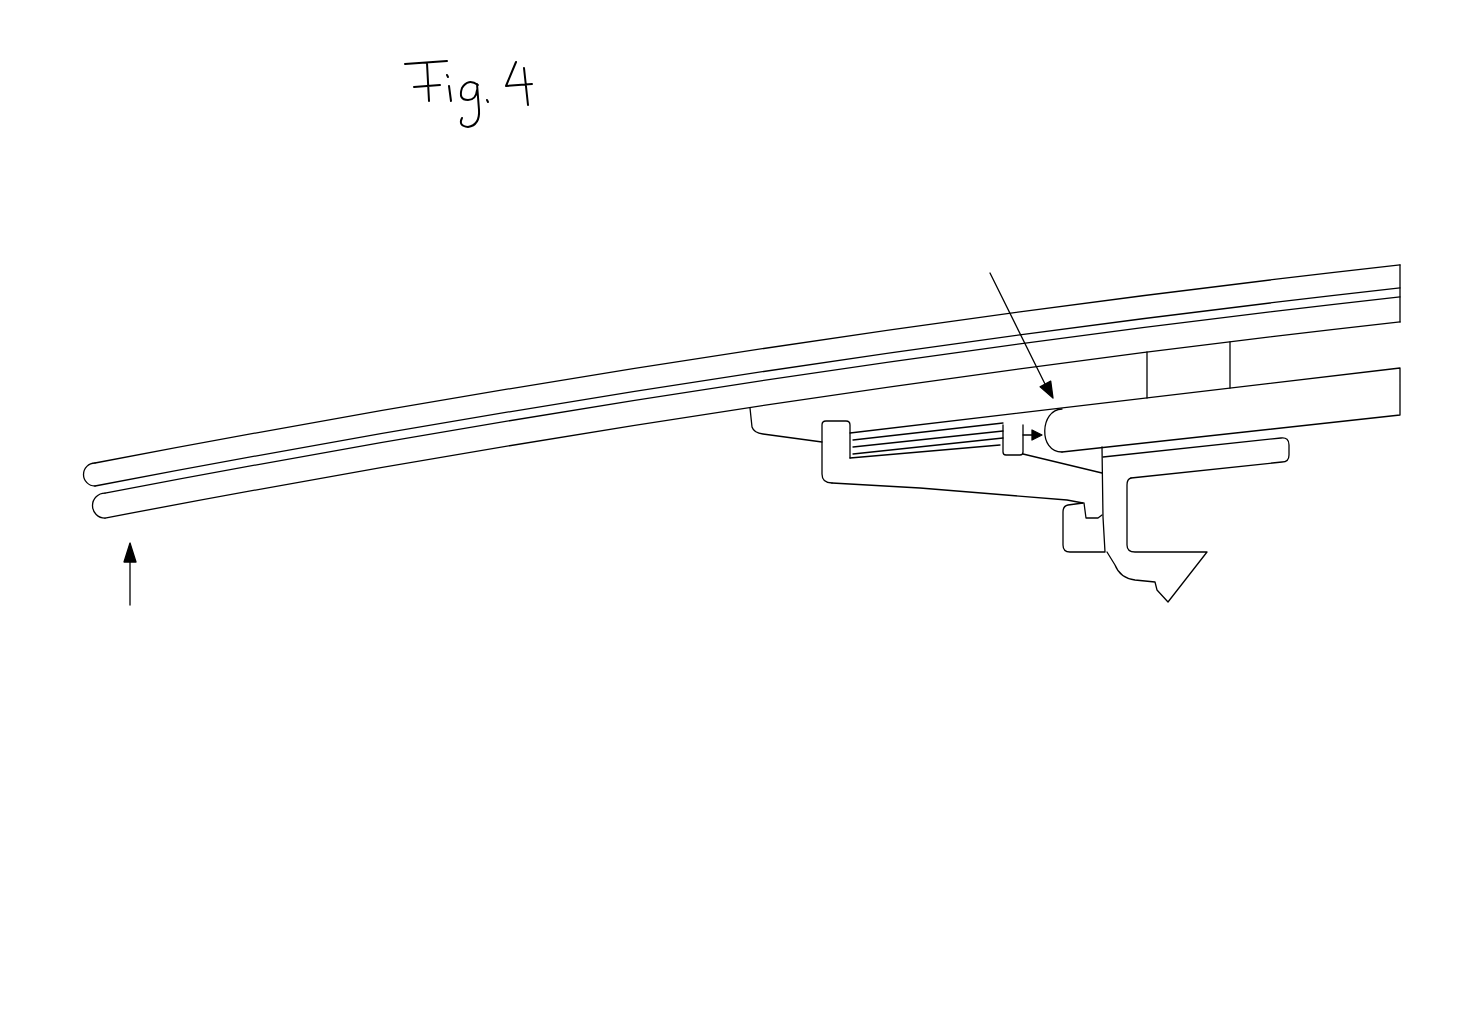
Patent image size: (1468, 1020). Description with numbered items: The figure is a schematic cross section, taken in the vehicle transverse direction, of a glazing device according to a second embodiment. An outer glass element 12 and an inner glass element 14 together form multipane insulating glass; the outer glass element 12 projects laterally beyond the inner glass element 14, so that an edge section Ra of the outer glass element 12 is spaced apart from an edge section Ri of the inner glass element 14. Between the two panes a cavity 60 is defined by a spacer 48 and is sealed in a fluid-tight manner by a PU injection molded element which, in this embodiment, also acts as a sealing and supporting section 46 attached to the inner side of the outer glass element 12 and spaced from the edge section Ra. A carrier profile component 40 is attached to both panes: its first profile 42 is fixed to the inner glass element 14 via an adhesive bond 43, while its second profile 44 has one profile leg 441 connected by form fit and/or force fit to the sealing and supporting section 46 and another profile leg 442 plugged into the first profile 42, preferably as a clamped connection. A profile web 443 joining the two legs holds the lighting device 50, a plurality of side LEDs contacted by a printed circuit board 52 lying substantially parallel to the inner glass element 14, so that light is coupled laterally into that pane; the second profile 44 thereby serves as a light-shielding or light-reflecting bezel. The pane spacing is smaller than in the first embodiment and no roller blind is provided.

The outer glass element 12 is at (1150, 305).
The spacer 48 is at (1192, 368).
The cavity 60 is at (1372, 347).
The inner glass element 14 is at (1367, 403).
The sealing and supporting section 46 is at (940, 400).
The printed circuit board 52 is at (897, 440).
The lighting device 50 is at (1018, 455).
The profile leg 441 is at (835, 455).
The profile web 443 is at (927, 447).
The second profile 44 is at (983, 480).
The carrier profile component 40 is at (779, 651).
The adhesive bond 43 is at (1253, 437).
The first profile 42 is at (1182, 574).
The profile leg 442 is at (1102, 547).
The edge section of the inner glass element Ri is at (993, 243).
The edge section of the outer glass element Ra is at (112, 665).